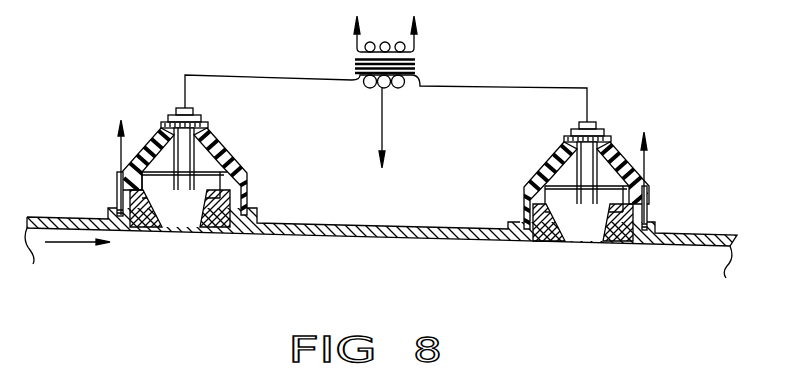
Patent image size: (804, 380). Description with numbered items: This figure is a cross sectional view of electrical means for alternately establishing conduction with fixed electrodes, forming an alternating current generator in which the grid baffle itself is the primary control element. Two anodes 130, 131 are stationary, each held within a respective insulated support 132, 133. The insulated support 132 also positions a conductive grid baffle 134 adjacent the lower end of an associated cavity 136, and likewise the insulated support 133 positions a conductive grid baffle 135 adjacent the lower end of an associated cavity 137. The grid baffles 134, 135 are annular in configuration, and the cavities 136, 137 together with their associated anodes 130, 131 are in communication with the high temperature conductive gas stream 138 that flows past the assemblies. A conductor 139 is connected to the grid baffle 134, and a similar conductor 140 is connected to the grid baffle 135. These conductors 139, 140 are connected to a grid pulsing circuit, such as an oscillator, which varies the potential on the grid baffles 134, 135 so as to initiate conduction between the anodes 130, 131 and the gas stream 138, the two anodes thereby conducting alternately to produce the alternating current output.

The anode 130 is at (206, 140).
The anode 131 is at (604, 162).
The insulated support 132 is at (245, 178).
The insulated support 133 is at (540, 175).
The conductive grid baffle 134 is at (225, 228).
The conductive grid baffle 135 is at (545, 238).
The cavity 136 is at (143, 197).
The cavity 137 is at (548, 200).
The high temperature conductive gas stream 138 is at (70, 243).
The conductor 139 is at (118, 142).
The conductor 140 is at (645, 170).